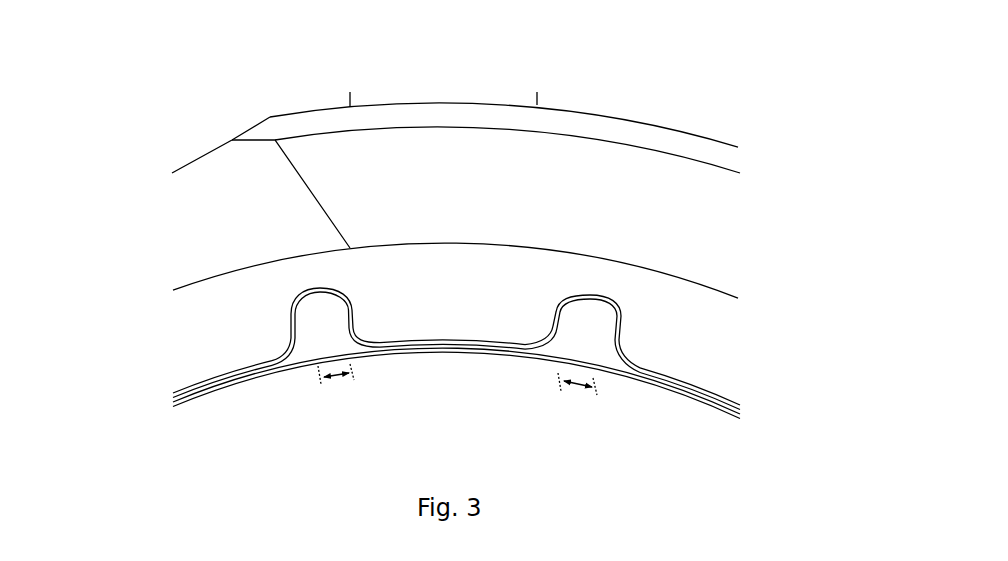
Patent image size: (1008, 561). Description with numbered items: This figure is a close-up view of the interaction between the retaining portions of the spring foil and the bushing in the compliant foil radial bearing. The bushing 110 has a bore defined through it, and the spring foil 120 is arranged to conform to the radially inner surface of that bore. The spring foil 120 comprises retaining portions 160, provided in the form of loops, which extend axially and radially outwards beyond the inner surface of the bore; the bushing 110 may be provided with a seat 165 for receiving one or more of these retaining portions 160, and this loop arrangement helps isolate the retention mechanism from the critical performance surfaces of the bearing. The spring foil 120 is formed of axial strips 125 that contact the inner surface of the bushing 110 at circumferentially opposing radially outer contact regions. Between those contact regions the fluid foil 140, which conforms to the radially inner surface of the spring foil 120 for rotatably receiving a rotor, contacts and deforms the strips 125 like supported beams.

The bushing 110 is at (257, 110).
The seat 165 is at (712, 279).
The retaining portions 160 is at (278, 323).
The spring foil 120 is at (380, 342).
The axial strips 125 is at (367, 347).
The fluid foil 140 is at (458, 355).